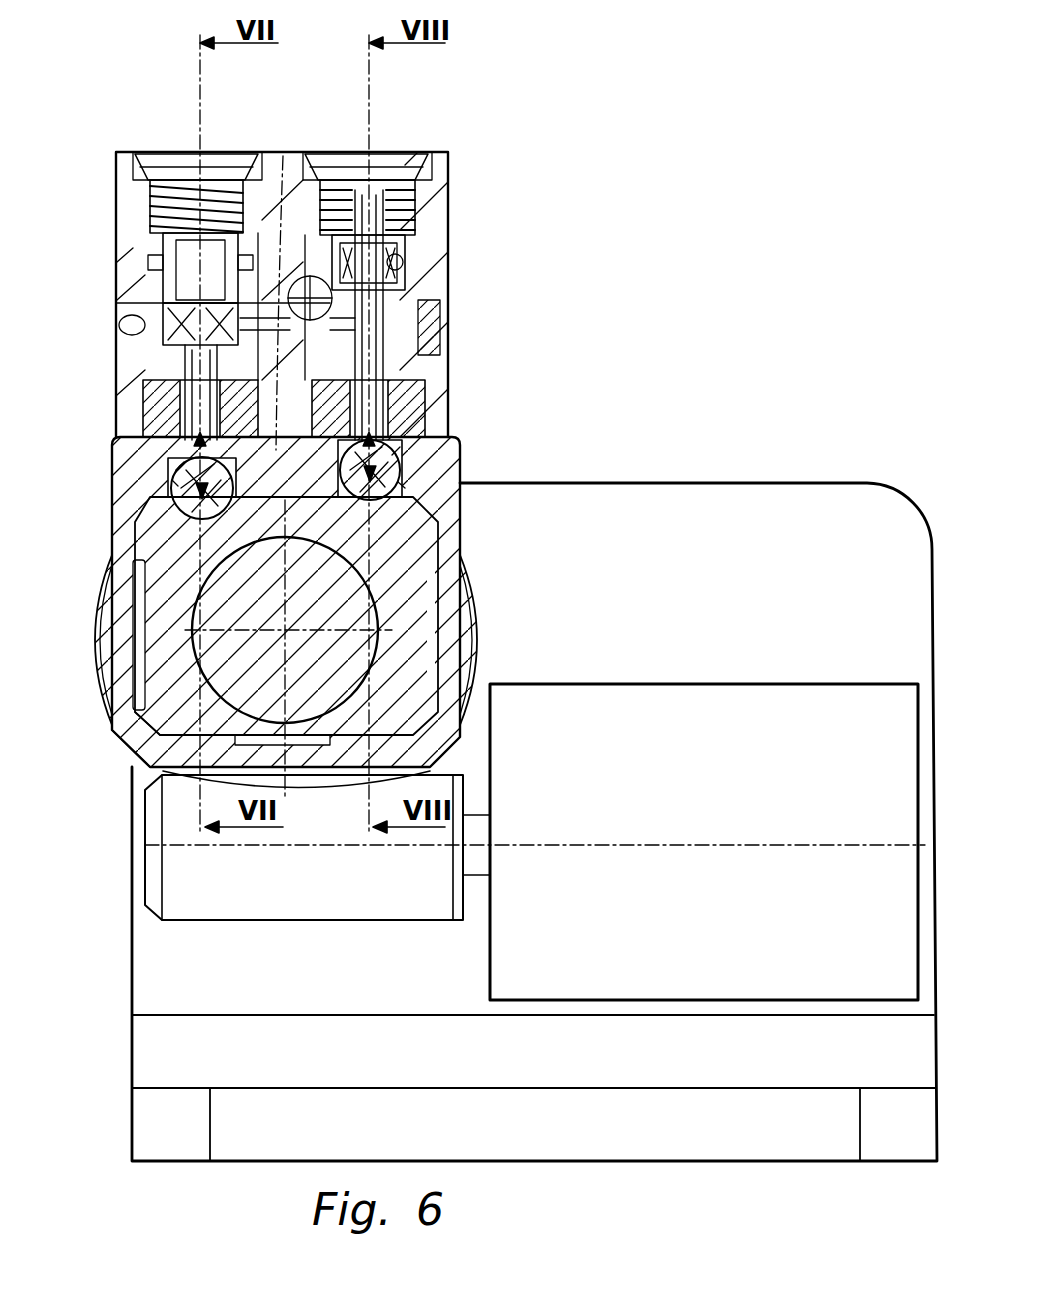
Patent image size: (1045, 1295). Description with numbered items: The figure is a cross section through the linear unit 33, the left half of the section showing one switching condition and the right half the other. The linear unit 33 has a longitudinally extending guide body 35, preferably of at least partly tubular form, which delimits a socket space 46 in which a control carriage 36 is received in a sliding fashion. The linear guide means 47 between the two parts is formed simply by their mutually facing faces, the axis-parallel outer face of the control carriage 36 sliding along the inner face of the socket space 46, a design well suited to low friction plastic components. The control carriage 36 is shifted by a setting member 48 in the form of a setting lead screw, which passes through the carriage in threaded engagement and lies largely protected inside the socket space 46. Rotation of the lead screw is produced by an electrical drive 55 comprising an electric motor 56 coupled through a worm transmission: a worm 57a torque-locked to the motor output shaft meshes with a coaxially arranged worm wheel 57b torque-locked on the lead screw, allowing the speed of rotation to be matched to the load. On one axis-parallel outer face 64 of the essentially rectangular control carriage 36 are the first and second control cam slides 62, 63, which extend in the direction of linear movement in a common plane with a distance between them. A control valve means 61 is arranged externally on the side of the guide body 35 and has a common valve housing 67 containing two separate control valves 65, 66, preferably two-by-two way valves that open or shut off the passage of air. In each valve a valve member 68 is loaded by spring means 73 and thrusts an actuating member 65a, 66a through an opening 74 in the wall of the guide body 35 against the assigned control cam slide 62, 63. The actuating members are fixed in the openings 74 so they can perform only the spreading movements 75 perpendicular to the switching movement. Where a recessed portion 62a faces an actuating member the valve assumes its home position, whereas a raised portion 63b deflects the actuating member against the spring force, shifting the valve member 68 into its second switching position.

The linear unit 33 is at (474, 591).
The guide body 35 is at (452, 548).
The control carriage 36 is at (162, 612).
The socket space 46 is at (420, 634).
The linear guide means 47 is at (110, 700).
The setting member 48 is at (355, 650).
The electrical drive 55 is at (646, 683).
The electric motor 56 is at (773, 705).
The worm 57a is at (368, 887).
The worm wheel 57b is at (300, 778).
The control valve means 61 is at (455, 160).
The first control cam slide 62 is at (190, 522).
The recessed portion 62a is at (258, 500).
The second control cam slide 63 is at (393, 540).
The raised portion 63b is at (336, 505).
The axis-parallel outer face 64 is at (302, 482).
The first control valve 65 is at (280, 249).
The actuating member 65a is at (140, 492).
The second control valve 66 is at (373, 150).
The actuating member 66a is at (420, 480).
The valve housing 67 is at (440, 222).
The valve member 68 is at (122, 330).
The spring means 73 is at (212, 160).
The openings 74 is at (176, 480).
The spreading movements 75 is at (165, 468).